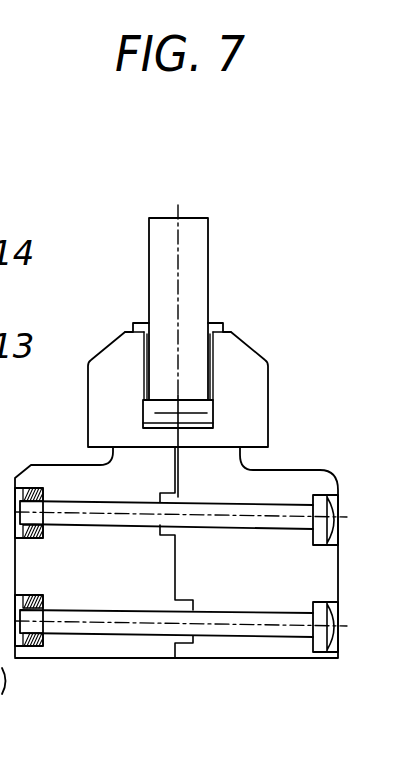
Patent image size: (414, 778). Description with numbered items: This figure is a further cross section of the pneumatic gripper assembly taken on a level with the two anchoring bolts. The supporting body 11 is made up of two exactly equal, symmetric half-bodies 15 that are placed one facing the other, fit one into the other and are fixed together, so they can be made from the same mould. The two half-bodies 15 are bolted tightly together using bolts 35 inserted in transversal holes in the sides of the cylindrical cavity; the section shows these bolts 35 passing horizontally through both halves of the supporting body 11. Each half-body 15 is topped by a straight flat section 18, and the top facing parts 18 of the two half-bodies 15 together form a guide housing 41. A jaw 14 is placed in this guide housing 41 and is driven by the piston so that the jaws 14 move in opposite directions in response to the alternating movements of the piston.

The supporting body 11 is at (344, 517).
The jaw 14 is at (210, 252).
The half-body 15 is at (53, 462).
The straight flat section 18 is at (250, 352).
The bolt 35 is at (247, 628).
The guide housing 41 is at (218, 358).